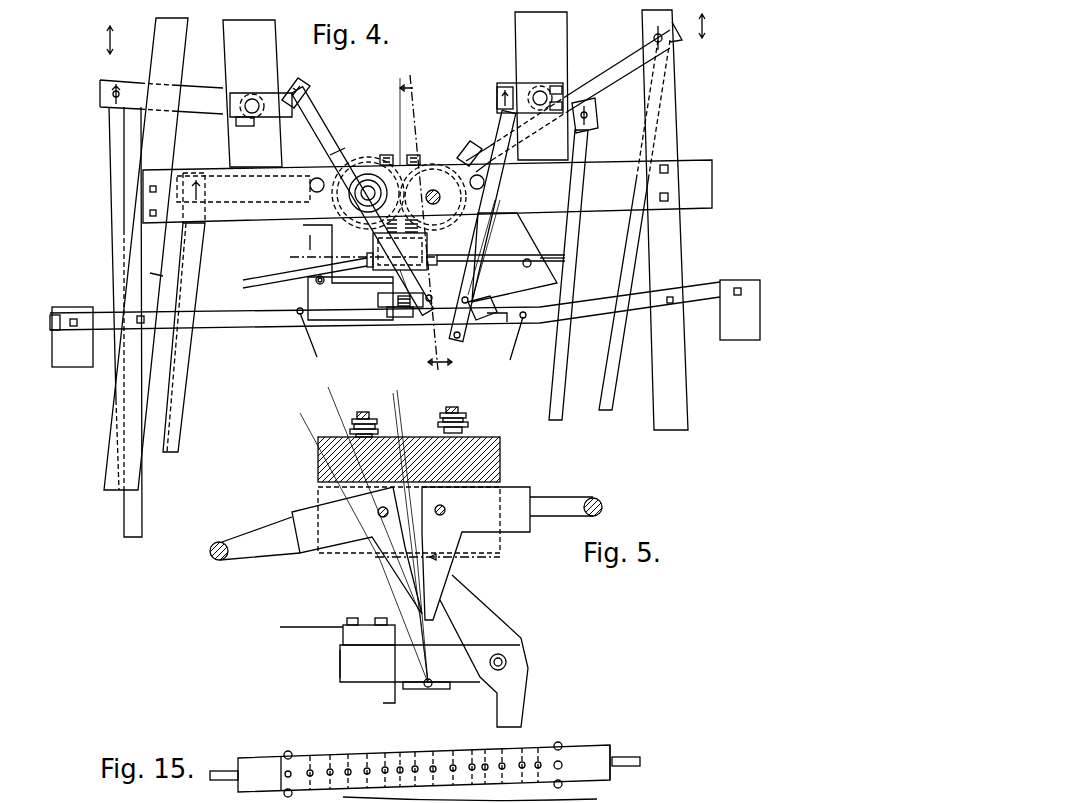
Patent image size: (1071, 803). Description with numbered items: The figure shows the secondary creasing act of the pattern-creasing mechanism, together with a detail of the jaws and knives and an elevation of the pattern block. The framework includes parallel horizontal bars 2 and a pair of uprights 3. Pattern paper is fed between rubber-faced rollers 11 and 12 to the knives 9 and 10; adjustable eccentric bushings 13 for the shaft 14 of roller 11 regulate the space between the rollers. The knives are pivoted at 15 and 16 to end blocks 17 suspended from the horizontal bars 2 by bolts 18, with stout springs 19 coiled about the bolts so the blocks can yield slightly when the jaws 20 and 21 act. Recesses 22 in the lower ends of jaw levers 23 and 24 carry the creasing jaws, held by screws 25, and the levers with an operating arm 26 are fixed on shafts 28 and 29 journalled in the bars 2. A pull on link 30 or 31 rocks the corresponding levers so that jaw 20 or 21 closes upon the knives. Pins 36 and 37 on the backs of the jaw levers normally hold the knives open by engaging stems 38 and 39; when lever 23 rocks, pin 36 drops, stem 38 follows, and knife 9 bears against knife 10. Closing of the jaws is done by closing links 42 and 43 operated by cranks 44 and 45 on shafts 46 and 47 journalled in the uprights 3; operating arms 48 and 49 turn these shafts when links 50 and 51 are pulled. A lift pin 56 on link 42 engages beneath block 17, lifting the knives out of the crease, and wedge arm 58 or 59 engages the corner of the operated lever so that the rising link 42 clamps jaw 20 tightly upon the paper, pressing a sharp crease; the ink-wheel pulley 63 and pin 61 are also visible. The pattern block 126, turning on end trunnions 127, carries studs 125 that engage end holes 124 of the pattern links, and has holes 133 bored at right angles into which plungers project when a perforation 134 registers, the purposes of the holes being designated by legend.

In FIG. 4, the horizontal bars 2 is at (215, 236).
In FIG. 4, the uprights 3 is at (225, 64).
In FIG. 4, the knife 9 is at (395, 223).
In FIG. 5, the knife 9 is at (395, 563).
In FIG. 4, the knife 10 is at (765, 25).
In FIG. 5, the knife 10 is at (440, 580).
In FIG. 4, the rubber-faced roller 11 is at (370, 254).
In FIG. 4, the rubber-faced roller 12 is at (428, 231).
In FIG. 4, the eccentric bushings 13 is at (368, 184).
In FIG. 4, the shaft 14 is at (300, 207).
In FIG. 5, the pivot 15 is at (357, 550).
In FIG. 5, the pivot 16 is at (445, 511).
In FIG. 4, the end blocks 17 is at (350, 298).
In FIG. 5, the end blocks 17 is at (318, 462).
In FIG. 4, the bolts 18 is at (405, 155).
In FIG. 5, the bolts 18 is at (362, 413).
In FIG. 5, the springs 19 is at (352, 426).
In FIG. 4, the creasing jaw 20 is at (400, 318).
In FIG. 5, the creasing jaw 20 is at (430, 667).
In FIG. 4, the creasing jaw 21 is at (598, 122).
In FIG. 4, the recesses 22 is at (375, 305).
In FIG. 5, the recesses 22 is at (333, 661).
In FIG. 4, the jaw lever 23 is at (310, 243).
In FIG. 5, the jaw lever 23 is at (310, 625).
In FIG. 4, the jaw lever 24 is at (520, 218).
In FIG. 5, the screws 25 is at (384, 618).
In FIG. 4, the operating arm 26 is at (268, 168).
In FIG. 4, the shaft 28 is at (337, 165).
In FIG. 4, the shaft 29 is at (457, 158).
In FIG. 4, the link 30 is at (195, 288).
In FIG. 4, the link 31 is at (562, 340).
In FIG. 4, the pin 36 is at (312, 282).
In FIG. 4, the pin 37 is at (572, 258).
In FIG. 4, the stem 38 is at (248, 280).
In FIG. 5, the stem 38 is at (255, 535).
In FIG. 4, the stem 39 is at (545, 256).
In FIG. 5, the stem 39 is at (567, 497).
In FIG. 4, the closing link 42 is at (318, 112).
In FIG. 5, the closing link 42 is at (468, 700).
In FIG. 4, the closing link 43 is at (497, 106).
In FIG. 4, the crank 44 is at (296, 82).
In FIG. 4, the crank 45 is at (507, 87).
In FIG. 4, the crank shaft 46 is at (253, 97).
In FIG. 4, the crank shaft 47 is at (537, 88).
In FIG. 4, the operating arm 48 is at (213, 115).
In FIG. 4, the operating arm 49 is at (568, 101).
In FIG. 4, the link 50 is at (138, 505).
In FIG. 4, the link 51 is at (602, 353).
In FIG. 4, the lift pin 56 is at (392, 312).
In FIG. 5, the lift pin 56 is at (447, 561).
In FIG. 4, the wedge arm 58 is at (275, 328).
In FIG. 4, the wedge arm 59 is at (710, 307).
In FIG. 4, the pin 61 is at (300, 340).
In FIG. 4, the pulley 63 is at (433, 196).
In FIG. 15, the end holes 124 is at (492, 796).
In FIG. 15, the studs 125 is at (580, 736).
In FIG. 15, the pattern block 126 is at (612, 757).
In FIG. 15, the end trunnions 127 is at (230, 772).
In FIG. 15, the holes 133 is at (285, 754).
In FIG. 15, the perforation 134 is at (500, 782).